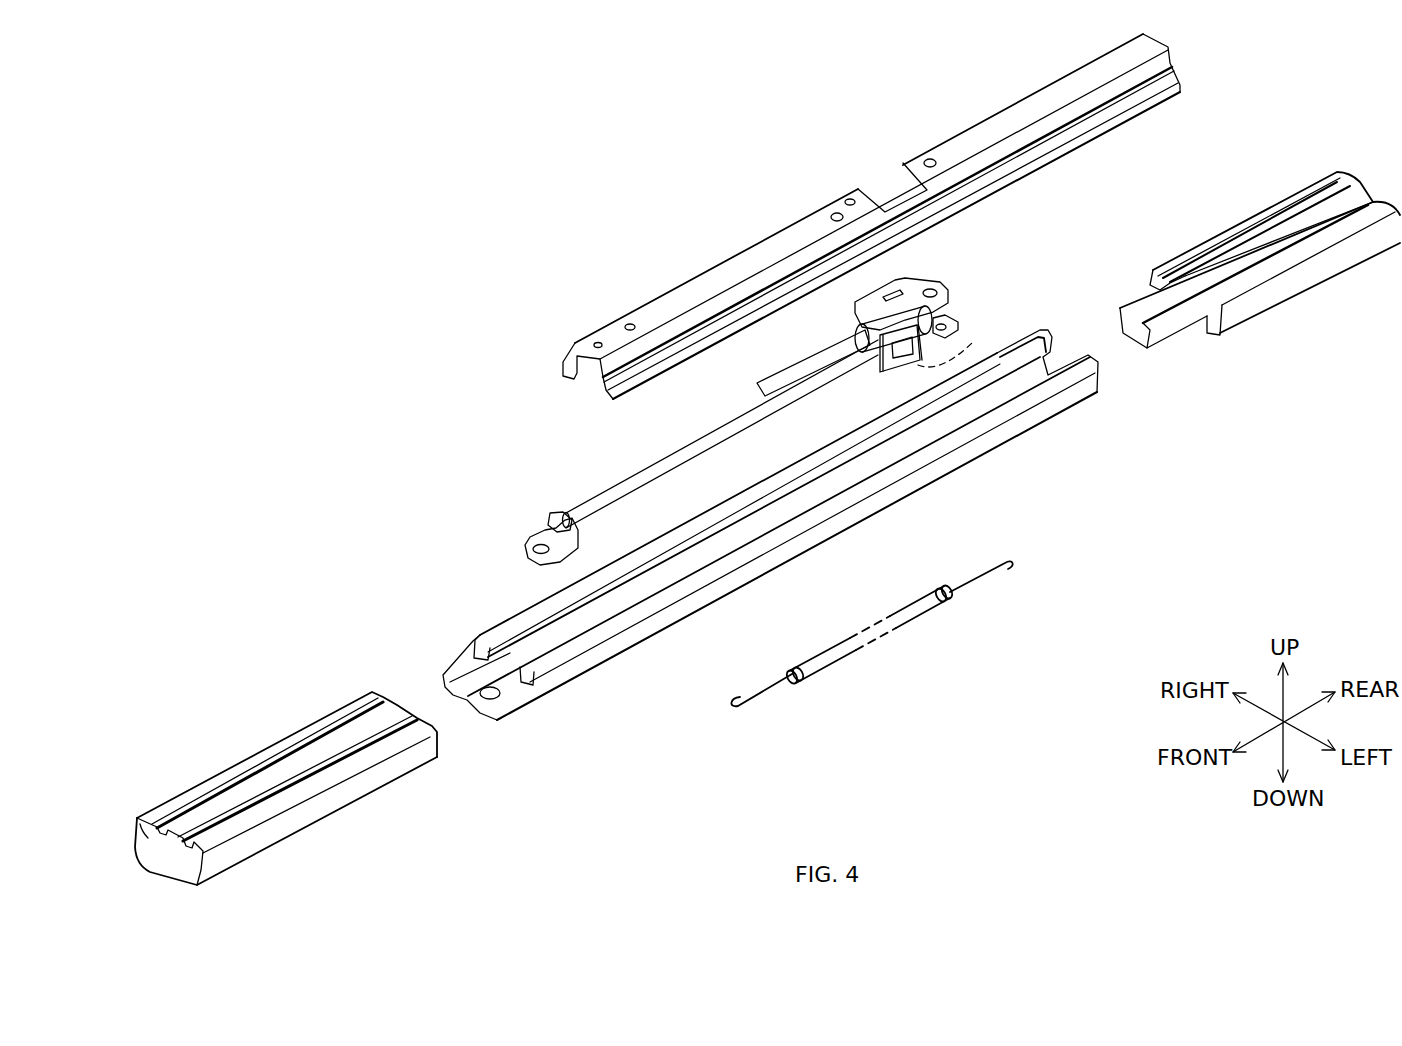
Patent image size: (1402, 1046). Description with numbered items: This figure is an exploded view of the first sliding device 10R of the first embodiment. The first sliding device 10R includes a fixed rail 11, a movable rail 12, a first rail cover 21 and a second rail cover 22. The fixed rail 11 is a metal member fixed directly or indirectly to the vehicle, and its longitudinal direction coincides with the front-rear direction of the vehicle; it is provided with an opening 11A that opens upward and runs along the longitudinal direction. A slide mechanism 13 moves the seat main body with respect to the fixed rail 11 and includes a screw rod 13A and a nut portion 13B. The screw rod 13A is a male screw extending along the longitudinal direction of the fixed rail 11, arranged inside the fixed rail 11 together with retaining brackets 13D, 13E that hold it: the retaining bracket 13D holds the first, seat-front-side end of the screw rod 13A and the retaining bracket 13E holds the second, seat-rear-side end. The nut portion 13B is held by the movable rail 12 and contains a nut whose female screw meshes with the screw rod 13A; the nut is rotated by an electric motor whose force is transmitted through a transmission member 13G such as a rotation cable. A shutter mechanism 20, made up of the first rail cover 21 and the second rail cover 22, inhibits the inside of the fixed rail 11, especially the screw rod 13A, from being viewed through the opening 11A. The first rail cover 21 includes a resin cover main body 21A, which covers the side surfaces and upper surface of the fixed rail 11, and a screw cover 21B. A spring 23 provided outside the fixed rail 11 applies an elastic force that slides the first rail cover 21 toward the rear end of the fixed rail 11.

The first sliding device 10R is at (498, 220).
The movable rail 12 is at (793, 223).
The slide mechanism 13 is at (937, 282).
The retaining bracket 13E is at (953, 317).
The nut portion 13B is at (975, 340).
The transmission member 13G is at (790, 367).
The screw rod 13A is at (635, 472).
The retaining bracket 13D is at (543, 535).
The fixed rail 11 is at (1000, 437).
The opening 11A is at (538, 648).
The shutter mechanism 20 is at (767, 503).
The second rail cover 22 is at (1238, 220).
The first rail cover 21 is at (302, 720).
The cover main body 21A is at (185, 800).
The screw cover 21B is at (257, 793).
The spring 23 is at (950, 597).